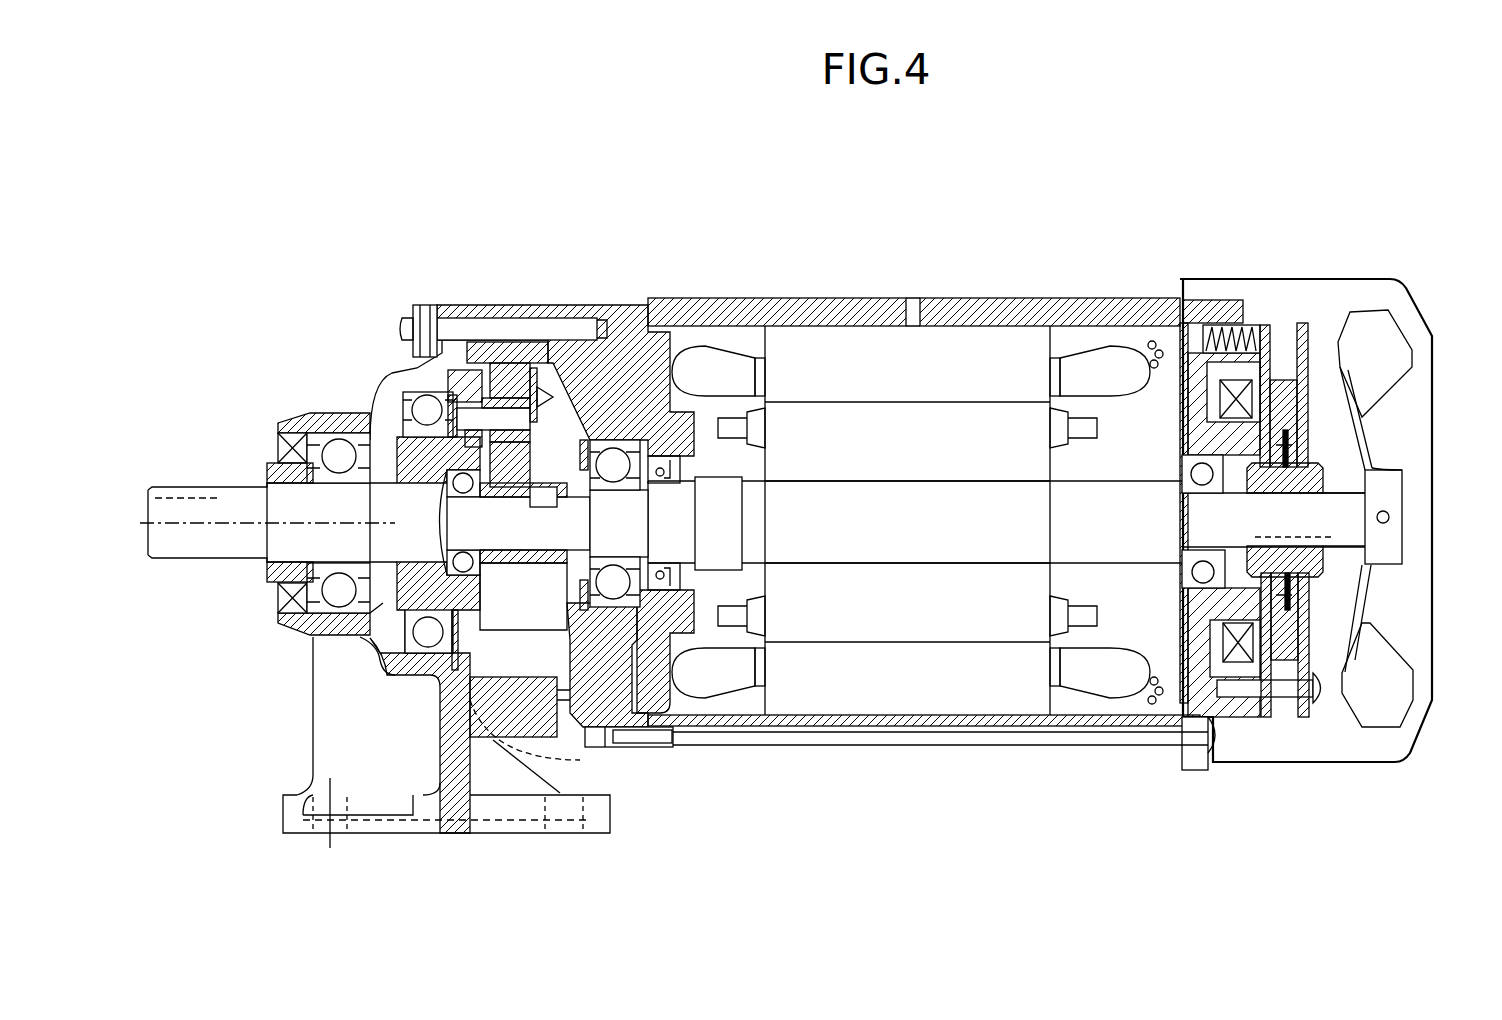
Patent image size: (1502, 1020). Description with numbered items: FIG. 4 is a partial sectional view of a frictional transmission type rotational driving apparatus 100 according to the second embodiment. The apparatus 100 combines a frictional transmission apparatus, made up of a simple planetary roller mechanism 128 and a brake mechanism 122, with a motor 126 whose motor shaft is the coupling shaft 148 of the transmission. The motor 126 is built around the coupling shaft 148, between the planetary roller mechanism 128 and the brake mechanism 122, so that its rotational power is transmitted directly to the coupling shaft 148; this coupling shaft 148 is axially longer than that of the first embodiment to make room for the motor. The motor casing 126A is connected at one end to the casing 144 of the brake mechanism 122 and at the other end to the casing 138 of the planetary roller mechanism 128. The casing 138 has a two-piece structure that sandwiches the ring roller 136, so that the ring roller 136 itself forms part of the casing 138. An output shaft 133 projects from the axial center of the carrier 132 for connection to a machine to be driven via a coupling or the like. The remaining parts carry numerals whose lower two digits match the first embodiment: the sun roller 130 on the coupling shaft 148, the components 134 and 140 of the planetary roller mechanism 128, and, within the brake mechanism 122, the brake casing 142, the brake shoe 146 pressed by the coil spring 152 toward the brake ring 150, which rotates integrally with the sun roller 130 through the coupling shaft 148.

The frictional transmission type rotational driving apparatus 100 is at (1215, 182).
The brake mechanism 122 is at (1422, 274).
The motor 126 is at (1052, 278).
The motor casing 126A is at (838, 500).
The simple planetary roller mechanism 128 is at (508, 652).
The sun roller 130 is at (505, 557).
The carrier 132 is at (380, 437).
The output shaft 133 is at (205, 548).
The gear 134 is at (520, 372).
The ring roller 136 is at (510, 305).
The casing 138 is at (430, 805).
The bolt 140 is at (405, 322).
The brake mechanism casing 142 is at (1283, 762).
The casing of the brake mechanism 144 is at (1266, 395).
The brake shoe 146 is at (1302, 390).
The coupling shaft 148 is at (673, 547).
The brake ring 150 is at (1290, 400).
The coil spring 152 is at (1222, 322).